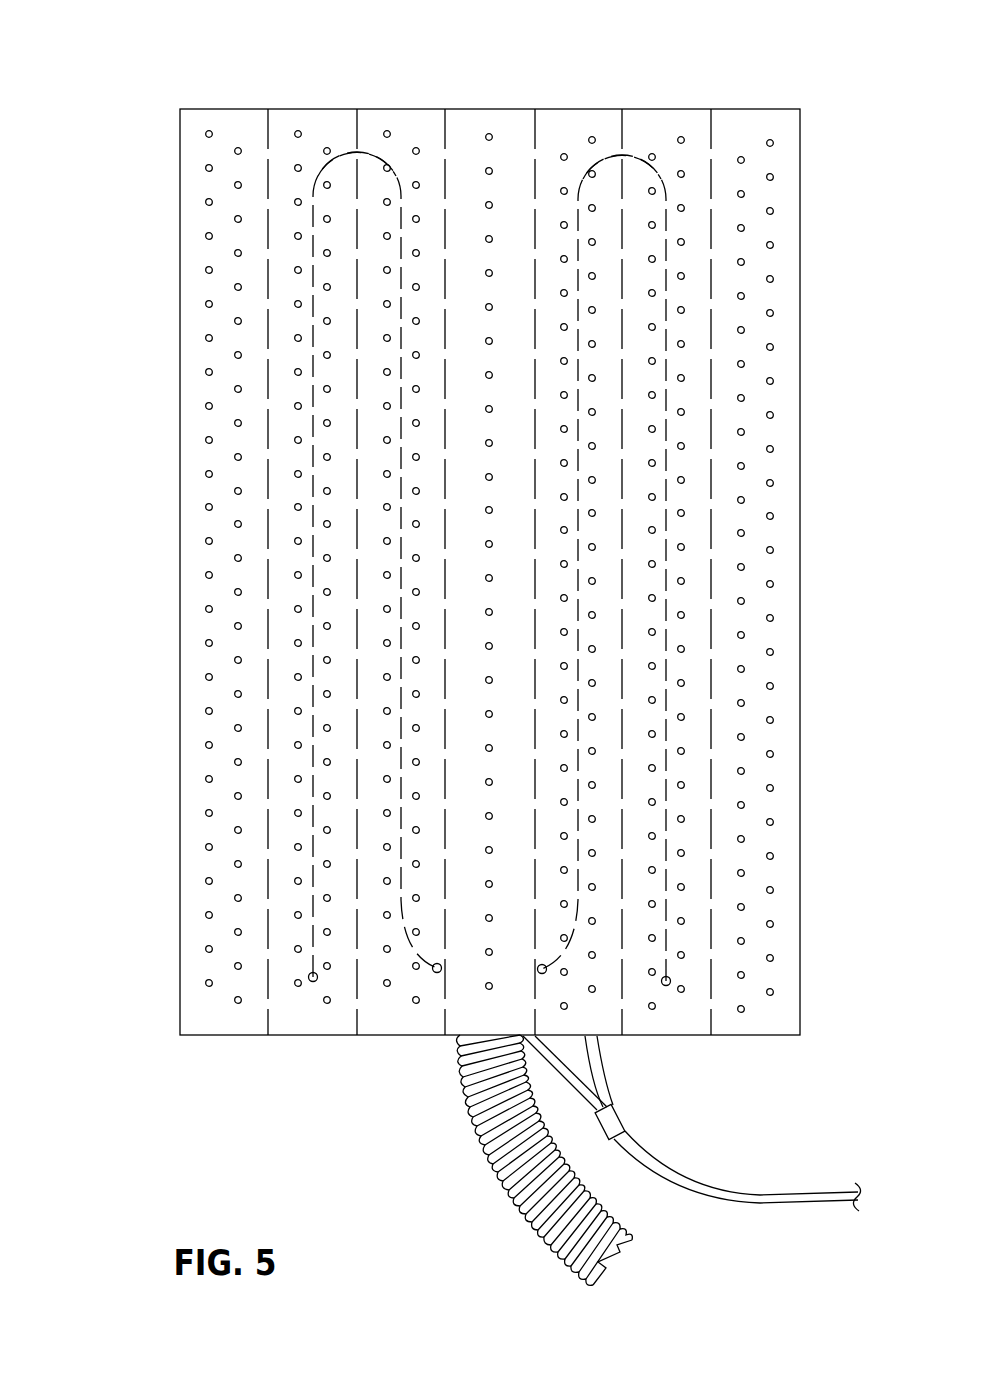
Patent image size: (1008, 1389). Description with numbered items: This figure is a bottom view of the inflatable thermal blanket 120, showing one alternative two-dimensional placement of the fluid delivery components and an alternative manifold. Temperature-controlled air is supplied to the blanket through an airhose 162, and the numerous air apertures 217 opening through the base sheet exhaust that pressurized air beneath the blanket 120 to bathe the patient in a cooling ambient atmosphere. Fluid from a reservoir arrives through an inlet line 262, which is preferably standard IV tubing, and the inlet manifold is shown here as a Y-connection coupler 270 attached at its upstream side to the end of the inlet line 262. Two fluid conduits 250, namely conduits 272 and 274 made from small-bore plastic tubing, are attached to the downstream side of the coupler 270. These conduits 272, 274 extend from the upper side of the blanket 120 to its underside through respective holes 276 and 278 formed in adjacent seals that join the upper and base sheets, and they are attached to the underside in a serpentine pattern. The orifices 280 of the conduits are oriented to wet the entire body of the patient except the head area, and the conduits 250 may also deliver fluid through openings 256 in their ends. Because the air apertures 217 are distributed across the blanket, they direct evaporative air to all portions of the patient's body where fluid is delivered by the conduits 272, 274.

The inflatable thermal blanket 120 is at (178, 63).
The airhose 162 is at (537, 1236).
The apertures 217 is at (237, 355).
The fluid conduits 250 is at (578, 187).
The openings 256 is at (309, 977).
The inlet line 262 is at (803, 1204).
The Y-connection coupler 270 is at (620, 1120).
The conduit 272 is at (338, 150).
The conduit 274 is at (643, 154).
The hole 276 is at (433, 969).
The hole 278 is at (538, 970).
The orifices 280 is at (371, 150).